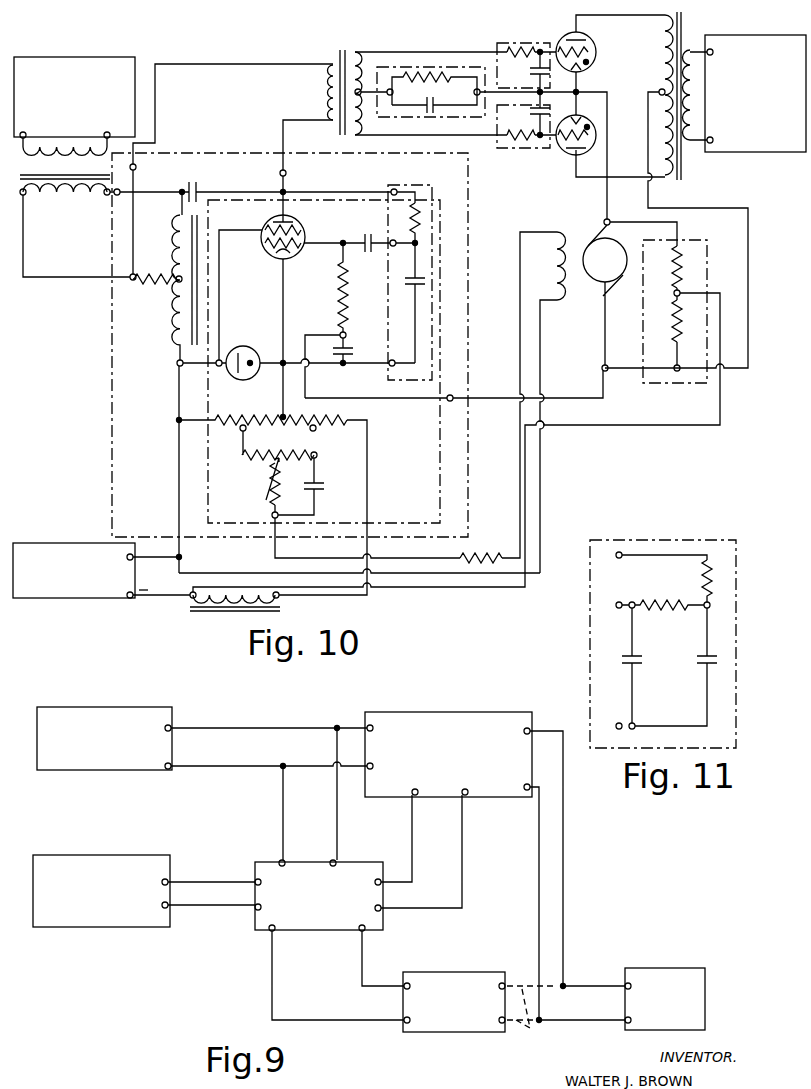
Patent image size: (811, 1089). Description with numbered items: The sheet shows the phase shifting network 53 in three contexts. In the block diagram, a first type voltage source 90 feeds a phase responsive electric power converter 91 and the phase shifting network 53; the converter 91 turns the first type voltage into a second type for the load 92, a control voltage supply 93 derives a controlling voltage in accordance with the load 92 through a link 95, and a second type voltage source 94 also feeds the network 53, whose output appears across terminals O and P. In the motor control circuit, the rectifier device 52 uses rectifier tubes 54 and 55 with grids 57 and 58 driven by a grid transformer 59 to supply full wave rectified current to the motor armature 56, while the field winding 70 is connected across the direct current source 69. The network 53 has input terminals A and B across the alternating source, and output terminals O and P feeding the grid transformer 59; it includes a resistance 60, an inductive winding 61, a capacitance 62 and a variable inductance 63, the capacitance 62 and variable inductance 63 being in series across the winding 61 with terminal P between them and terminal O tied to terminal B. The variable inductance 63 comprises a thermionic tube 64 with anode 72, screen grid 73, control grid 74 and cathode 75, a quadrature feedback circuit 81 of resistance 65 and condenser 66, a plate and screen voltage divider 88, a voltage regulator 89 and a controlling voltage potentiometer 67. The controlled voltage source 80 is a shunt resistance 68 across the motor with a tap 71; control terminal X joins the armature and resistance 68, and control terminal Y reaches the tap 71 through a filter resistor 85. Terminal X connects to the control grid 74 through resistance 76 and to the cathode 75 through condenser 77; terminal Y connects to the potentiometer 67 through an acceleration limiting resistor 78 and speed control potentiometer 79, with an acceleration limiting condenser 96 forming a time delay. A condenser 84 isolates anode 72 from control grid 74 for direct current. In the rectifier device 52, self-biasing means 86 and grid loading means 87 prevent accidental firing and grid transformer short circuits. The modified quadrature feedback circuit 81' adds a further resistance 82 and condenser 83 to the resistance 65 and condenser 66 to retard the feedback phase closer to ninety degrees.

In FIG. 10, the rectifier device 52 is at (640, 70).
In FIG. 10, the phase shifting network 53 is at (173, 157).
In FIG. 9, the phase shifting network 53 is at (258, 862).
In FIG. 10, the rectifier tube 54 is at (568, 39).
In FIG. 10, the rectifier tube 55 is at (596, 121).
In FIG. 10, the motor armature 56 is at (597, 285).
In FIG. 10, the grid 57 is at (589, 49).
In FIG. 10, the grid 58 is at (596, 134).
In FIG. 10, the grid transformer 59 is at (355, 44).
In FIG. 10, the resistance 60 is at (155, 291).
In FIG. 10, the inductive winding 61 is at (178, 320).
In FIG. 10, the capacitance 62 is at (200, 188).
In FIG. 10, the variable inductance 63 is at (355, 200).
In FIG. 10, the thermionic tube 64 is at (307, 239).
In FIG. 10, the resistance 65 is at (406, 222).
In FIG. 11, the resistance 65 is at (700, 586).
In FIG. 10, the condenser 66 is at (408, 304).
In FIG. 11, the condenser 66 is at (701, 668).
In FIG. 10, the controlling voltage potentiometer 67 is at (320, 418).
In FIG. 10, the shunt resistance 68 is at (680, 272).
In FIG. 10, the direct current source 69 is at (52, 543).
In FIG. 10, the field winding 70 is at (556, 263).
In FIG. 10, the tap 71 is at (681, 300).
In FIG. 10, the anode 72 is at (291, 223).
In FIG. 10, the screen grid 73 is at (266, 222).
In FIG. 10, the control grid 74 is at (264, 245).
In FIG. 10, the cathode 75 is at (296, 252).
In FIG. 10, the resistance 76 is at (349, 292).
In FIG. 10, the condenser 77 is at (348, 349).
In FIG. 10, the acceleration limiting resistor 78 is at (267, 486).
In FIG. 10, the speed control potentiometer 79 is at (248, 463).
In FIG. 10, the controlled voltage source 80 is at (708, 248).
In FIG. 10, the quadrature feedback circuit 81 is at (424, 269).
In FIG. 11, the modified quadrature feedback circuit 81' is at (685, 641).
In FIG. 11, the resistance 82 is at (660, 603).
In FIG. 11, the condenser 83 is at (637, 657).
In FIG. 10, the condenser 84 is at (367, 254).
In FIG. 10, the filter resistor 85 is at (477, 556).
In FIG. 10, the self-biasing means 86 is at (400, 68).
In FIG. 10, the grid loading means 87 is at (512, 48).
In FIG. 10, the plate and screen voltage divider 88 is at (240, 416).
In FIG. 10, the voltage regulator 89 is at (235, 352).
In FIG. 9, the first type voltage source 90 is at (72, 770).
In FIG. 9, the phase responsive electric power converter 91 is at (498, 798).
In FIG. 9, the load 92 is at (700, 968).
In FIG. 9, the control voltage supply 93 is at (495, 972).
In FIG. 9, the second type voltage source 94 is at (124, 858).
In FIG. 9, the switch 95 is at (530, 1030).
In FIG. 10, the acceleration limiting condenser 96 is at (322, 485).
In FIG. 10, the first output terminal O is at (137, 167).
In FIG. 9, the first output terminal O is at (382, 880).
In FIG. 10, the second output terminal P is at (287, 174).
In FIG. 9, the second output terminal P is at (382, 911).
In FIG. 10, the first input terminal A is at (121, 201).
In FIG. 10, the second input terminal B is at (131, 274).
In FIG. 10, the first control terminal X is at (451, 401).
In FIG. 10, the second control terminal Y is at (272, 516).